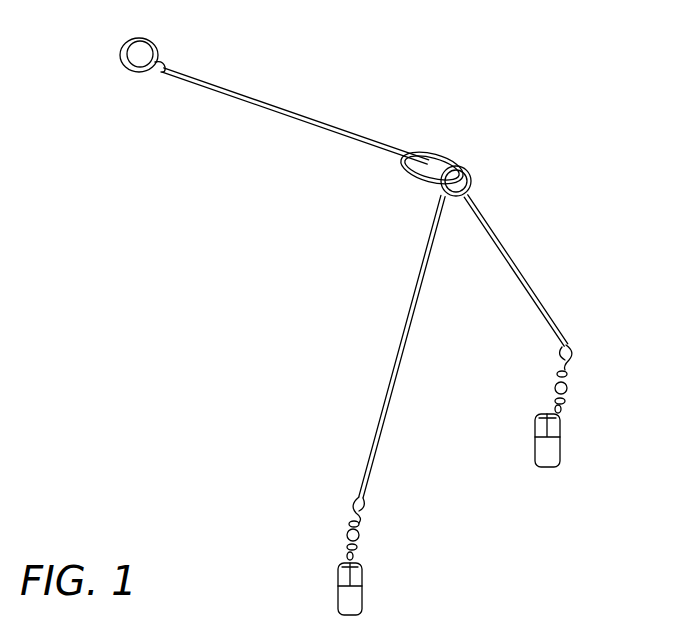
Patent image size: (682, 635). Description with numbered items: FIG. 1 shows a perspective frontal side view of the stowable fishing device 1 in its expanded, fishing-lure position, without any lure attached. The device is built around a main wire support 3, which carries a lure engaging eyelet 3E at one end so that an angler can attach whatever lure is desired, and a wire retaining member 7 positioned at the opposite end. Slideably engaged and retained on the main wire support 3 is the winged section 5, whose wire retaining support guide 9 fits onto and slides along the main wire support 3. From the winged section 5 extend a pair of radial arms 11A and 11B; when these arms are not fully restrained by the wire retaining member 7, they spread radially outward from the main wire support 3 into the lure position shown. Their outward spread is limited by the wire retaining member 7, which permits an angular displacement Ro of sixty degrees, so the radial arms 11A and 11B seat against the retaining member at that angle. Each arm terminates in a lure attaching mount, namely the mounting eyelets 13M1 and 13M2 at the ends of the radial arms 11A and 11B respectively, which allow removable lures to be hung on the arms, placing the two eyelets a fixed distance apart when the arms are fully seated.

The stowable fishing device 1 is at (376, 66).
The main wire support 3 is at (260, 129).
The lure engaging eyelet 3E is at (156, 44).
The wire retaining support guide 9 is at (451, 146).
The wire retaining member 7 is at (471, 177).
The winged section 5 is at (402, 308).
The radial arm 11A is at (398, 384).
The radial arm 11B is at (525, 270).
The angular displacement Ro is at (537, 310).
The mounting eyelet 13M1 is at (368, 508).
The mounting eyelet 13M2 is at (579, 342).